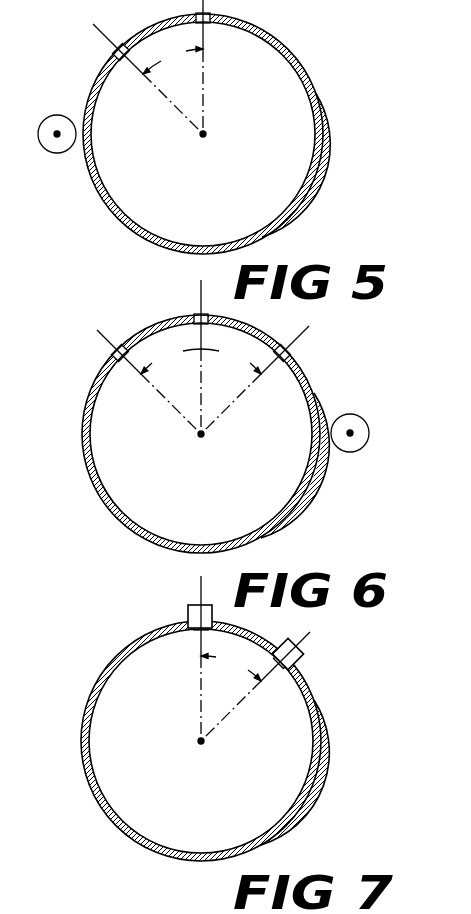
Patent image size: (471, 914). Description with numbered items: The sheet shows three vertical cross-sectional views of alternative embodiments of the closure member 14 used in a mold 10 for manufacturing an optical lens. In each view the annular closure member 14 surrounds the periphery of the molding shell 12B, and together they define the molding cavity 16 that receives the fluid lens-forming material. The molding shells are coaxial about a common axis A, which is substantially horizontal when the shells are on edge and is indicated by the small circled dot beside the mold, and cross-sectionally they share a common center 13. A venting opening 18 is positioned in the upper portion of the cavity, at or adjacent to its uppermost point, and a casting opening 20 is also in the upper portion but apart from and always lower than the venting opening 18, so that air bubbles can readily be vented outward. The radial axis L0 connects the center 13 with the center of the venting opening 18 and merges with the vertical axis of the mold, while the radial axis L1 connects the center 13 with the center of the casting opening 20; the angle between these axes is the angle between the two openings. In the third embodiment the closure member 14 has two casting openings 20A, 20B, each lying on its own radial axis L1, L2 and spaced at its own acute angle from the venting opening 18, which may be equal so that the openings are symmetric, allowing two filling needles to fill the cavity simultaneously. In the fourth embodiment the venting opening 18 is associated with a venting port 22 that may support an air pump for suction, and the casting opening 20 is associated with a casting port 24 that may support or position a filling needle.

In FIG. 6, the mold 10 is at (196, 421).
In FIG. 7, the mold 10 is at (198, 728).
In FIG. 5, the molding shell 12B is at (213, 206).
In FIG. 6, the molding shell 12B is at (206, 510).
In FIG. 7, the molding shell 12B is at (188, 810).
In FIG. 5, the center 13 is at (204, 136).
In FIG. 6, the center 13 is at (202, 436).
In FIG. 7, the center 13 is at (202, 743).
In FIG. 5, the closure member 14 is at (205, 127).
In FIG. 6, the closure member 14 is at (217, 421).
In FIG. 7, the closure member 14 is at (184, 740).
In FIG. 5, the molding cavity 16 is at (287, 100).
In FIG. 6, the molding cavity 16 is at (108, 460).
In FIG. 7, the molding cavity 16 is at (103, 753).
In FIG. 5, the venting opening 18 is at (197, 14).
In FIG. 6, the venting opening 18 is at (197, 316).
In FIG. 7, the venting opening 18 is at (193, 633).
In FIG. 5, the casting opening 20 is at (114, 52).
In FIG. 7, the casting opening 20 is at (287, 666).
In FIG. 6, the casting opening 20A is at (290, 355).
In FIG. 6, the casting opening 20B is at (124, 343).
In FIG. 7, the venting port 22 is at (187, 614).
In FIG. 7, the casting port 24 is at (302, 664).
In FIG. 5, the axis A is at (53, 140).
In FIG. 6, the axis A is at (352, 440).
In FIG. 6, the axis L0 is at (200, 296).
In FIG. 7, the axis L0 is at (200, 593).
In FIG. 5, the axis L1 is at (95, 27).
In FIG. 6, the axis L1 is at (311, 331).
In FIG. 7, the axis L1 is at (311, 633).
In FIG. 6, the second radial line L2 is at (98, 332).